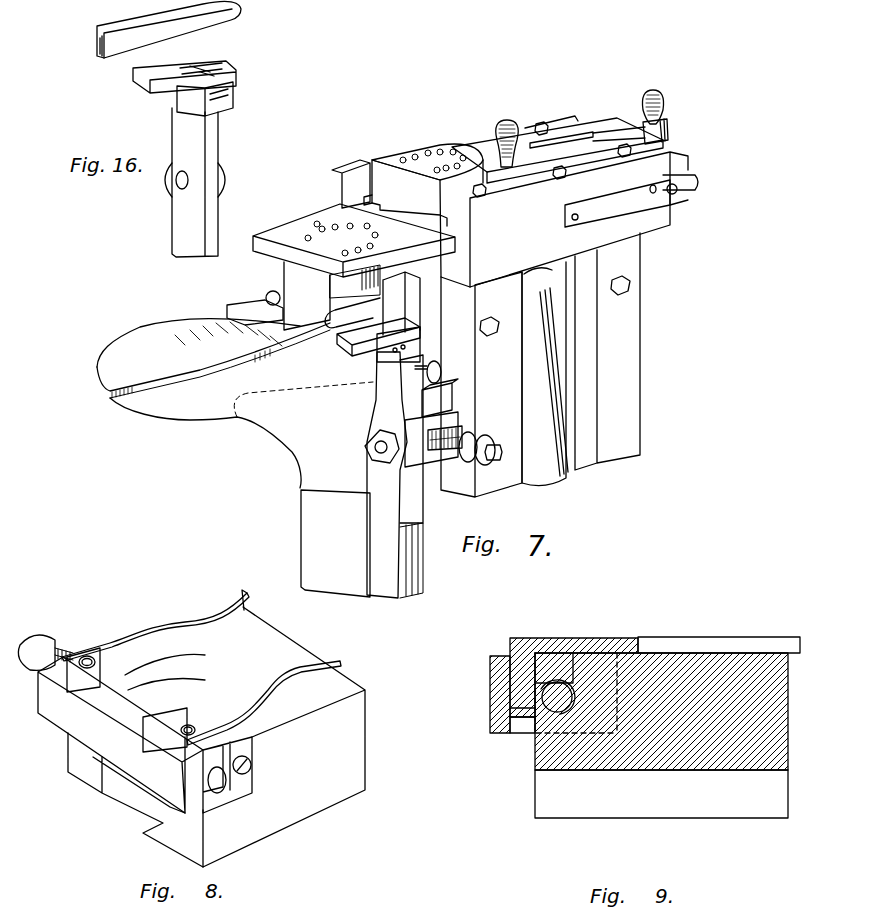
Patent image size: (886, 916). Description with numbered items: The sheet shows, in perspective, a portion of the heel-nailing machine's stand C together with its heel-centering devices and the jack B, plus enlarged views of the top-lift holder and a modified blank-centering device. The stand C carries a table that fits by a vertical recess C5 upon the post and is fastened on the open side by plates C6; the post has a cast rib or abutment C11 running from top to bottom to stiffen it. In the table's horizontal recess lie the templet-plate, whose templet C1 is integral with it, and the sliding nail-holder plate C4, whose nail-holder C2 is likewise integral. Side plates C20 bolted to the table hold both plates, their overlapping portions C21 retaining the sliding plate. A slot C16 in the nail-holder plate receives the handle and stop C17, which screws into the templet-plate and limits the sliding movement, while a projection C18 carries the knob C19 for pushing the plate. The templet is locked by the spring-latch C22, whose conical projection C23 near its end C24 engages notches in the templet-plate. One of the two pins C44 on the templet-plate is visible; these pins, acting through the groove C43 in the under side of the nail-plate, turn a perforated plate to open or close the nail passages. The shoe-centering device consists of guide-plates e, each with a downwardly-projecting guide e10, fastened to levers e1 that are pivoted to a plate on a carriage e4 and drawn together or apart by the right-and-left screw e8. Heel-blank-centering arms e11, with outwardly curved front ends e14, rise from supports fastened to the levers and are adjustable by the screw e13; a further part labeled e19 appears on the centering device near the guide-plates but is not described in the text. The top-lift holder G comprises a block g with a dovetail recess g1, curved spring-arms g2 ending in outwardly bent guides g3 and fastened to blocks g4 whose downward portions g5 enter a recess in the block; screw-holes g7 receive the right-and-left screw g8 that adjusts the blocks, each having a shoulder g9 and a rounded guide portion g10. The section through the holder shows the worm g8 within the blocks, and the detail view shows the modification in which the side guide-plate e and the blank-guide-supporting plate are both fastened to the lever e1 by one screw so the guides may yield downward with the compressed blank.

In FIG. 16, the guide-plate e is at (165, 84).
In FIG. 7, the guide-plate e is at (323, 326).
In FIG. 16, the lever e1 is at (195, 182).
In FIG. 7, the lever e1 is at (394, 475).
In FIG. 7, the templet C1 is at (354, 240).
In FIG. 7, the nail-holder C2 is at (430, 148).
In FIG. 7, the side plates C20 is at (365, 210).
In FIG. 7, the spring-latch C22 is at (579, 215).
In FIG. 7, the projection of spring-latch C23 is at (668, 205).
In FIG. 7, the end of spring-latch C24 is at (690, 188).
In FIG. 7, the slot C16 is at (566, 124).
In FIG. 7, the handle and stop C17 is at (528, 120).
In FIG. 7, the nail-holder plate C4 is at (590, 132).
In FIG. 7, the overlapping portions C21 is at (480, 136).
In FIG. 7, the handle or knob C19 is at (657, 96).
In FIG. 7, the projection C18 is at (666, 124).
In FIG. 7, the vertical cavity or recess C5 is at (668, 140).
In FIG. 7, the groove or recess C43 is at (368, 170).
In FIG. 7, the pins C44 is at (312, 196).
In FIG. 7, the stand C is at (491, 384).
In FIG. 7, the rib or abutment C11 is at (545, 374).
In FIG. 7, the plates C6 is at (607, 351).
In FIG. 7, the jack B is at (235, 458).
In FIG. 7, the front ends of arms e14 is at (266, 297).
In FIG. 7, the arms e11 is at (352, 298).
In FIG. 7, the guide e19 is at (330, 335).
In FIG. 7, the downwardly-projecting guide e10 is at (355, 350).
In FIG. 7, the screw e13 is at (442, 366).
In FIG. 7, the right-and-left screw or worm e8 is at (470, 424).
In FIG. 7, the carriage e4 is at (452, 413).
In FIG. 8, the top-lift spanker and holder G is at (201, 737).
In FIG. 8, the block g is at (293, 640).
In FIG. 9, the block g is at (661, 735).
In FIG. 8, the spring-arms g2 is at (85, 630).
In FIG. 9, the spring-arms g2 is at (705, 642).
In FIG. 8, the outwardly-projecting end g3 is at (247, 592).
In FIG. 8, the rounded portion g10 is at (47, 642).
In FIG. 8, the blocks g4 is at (180, 713).
In FIG. 8, the surface or shoulder g9 is at (150, 666).
In FIG. 8, the dovetail recess g1 is at (147, 790).
In FIG. 9, the screw-holes g7 is at (582, 638).
In FIG. 9, the downwardly-projecting portions g5 is at (490, 674).
In FIG. 9, the right-and-left screw or worm g8 is at (526, 735).